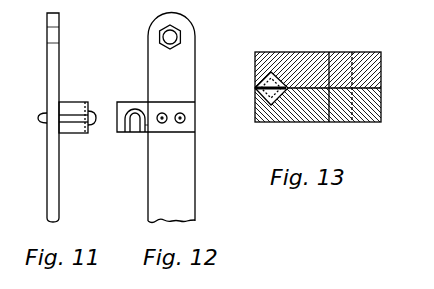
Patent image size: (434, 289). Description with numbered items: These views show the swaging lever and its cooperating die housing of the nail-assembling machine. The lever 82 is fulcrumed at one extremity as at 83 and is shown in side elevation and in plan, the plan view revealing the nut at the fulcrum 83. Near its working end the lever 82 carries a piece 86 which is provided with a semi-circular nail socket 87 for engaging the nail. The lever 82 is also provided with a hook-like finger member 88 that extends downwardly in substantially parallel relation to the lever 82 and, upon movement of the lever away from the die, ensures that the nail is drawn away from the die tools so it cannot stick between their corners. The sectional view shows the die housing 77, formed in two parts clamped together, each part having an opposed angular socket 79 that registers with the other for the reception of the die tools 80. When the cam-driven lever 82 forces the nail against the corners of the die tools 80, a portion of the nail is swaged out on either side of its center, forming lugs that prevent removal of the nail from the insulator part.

In FIG. 13, the die housing 77 is at (277, 53).
In FIG. 13, the angular sockets 79 is at (258, 96).
In FIG. 13, the die tools 80 is at (255, 88).
In FIG. 11, the lever 82 is at (55, 177).
In FIG. 12, the lever 82 is at (155, 199).
In FIG. 11, the fulcrum 83 is at (60, 34).
In FIG. 12, the fulcrum 83 is at (161, 34).
In FIG. 11, the piece 86 is at (72, 106).
In FIG. 12, the piece 86 is at (158, 106).
In FIG. 12, the semi-circular nail socket 87 is at (143, 118).
In FIG. 12, the hook-like finger member 88 is at (125, 128).